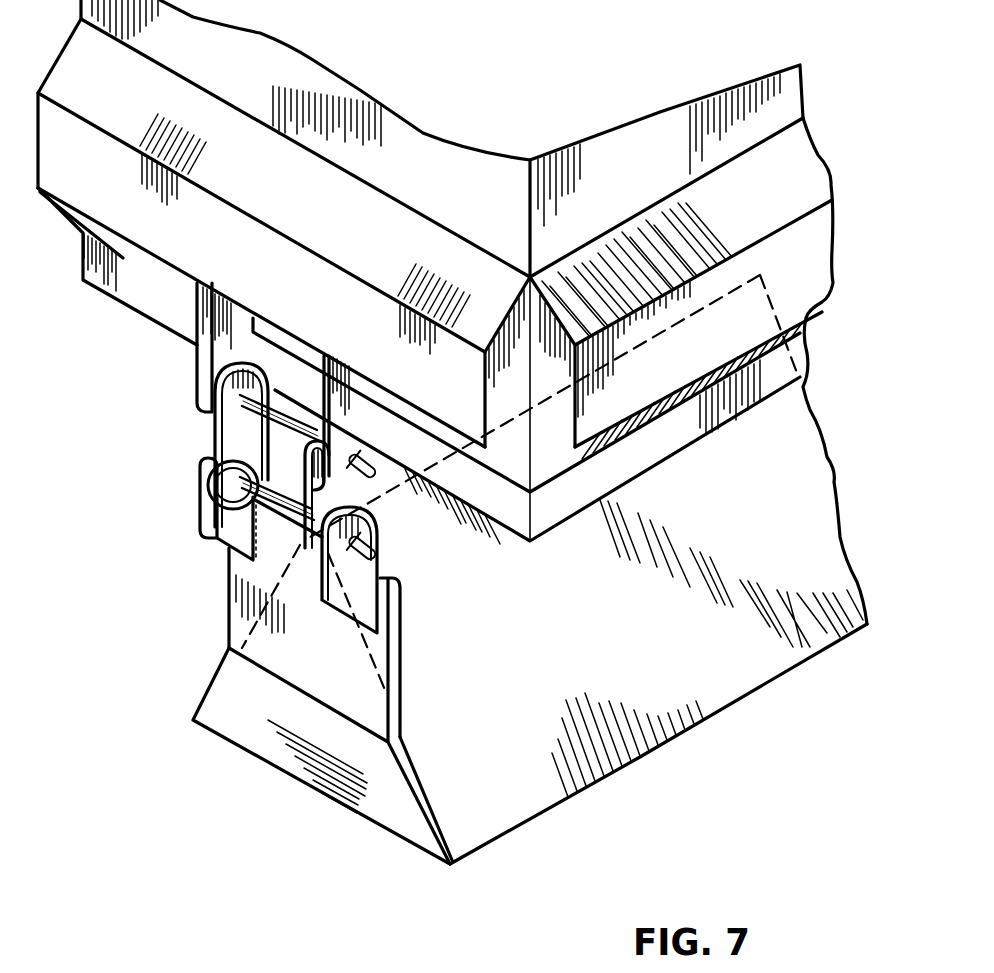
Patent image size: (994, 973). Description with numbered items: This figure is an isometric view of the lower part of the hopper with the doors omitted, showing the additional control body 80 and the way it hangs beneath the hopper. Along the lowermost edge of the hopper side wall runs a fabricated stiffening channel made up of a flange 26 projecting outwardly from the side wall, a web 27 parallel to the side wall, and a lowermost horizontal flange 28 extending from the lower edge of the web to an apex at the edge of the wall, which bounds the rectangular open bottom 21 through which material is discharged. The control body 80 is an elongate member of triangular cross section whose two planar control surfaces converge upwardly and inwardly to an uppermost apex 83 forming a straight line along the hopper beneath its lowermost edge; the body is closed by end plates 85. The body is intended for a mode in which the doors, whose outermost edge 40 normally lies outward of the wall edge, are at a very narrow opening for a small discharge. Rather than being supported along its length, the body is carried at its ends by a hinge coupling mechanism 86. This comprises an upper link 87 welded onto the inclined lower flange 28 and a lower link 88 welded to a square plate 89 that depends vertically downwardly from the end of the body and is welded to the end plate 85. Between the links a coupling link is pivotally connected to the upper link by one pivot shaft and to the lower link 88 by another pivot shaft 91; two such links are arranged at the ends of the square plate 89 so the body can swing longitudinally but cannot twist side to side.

The open bottom 21 is at (676, 457).
The flange 26 is at (368, 200).
The web 27 is at (325, 276).
The lowermost horizontal flange 28 is at (168, 270).
The outermost edge 40 is at (272, 372).
The uppermost apex 83 is at (402, 473).
The control body 80 is at (266, 777).
The end plates 85 is at (235, 722).
The hinge coupling mechanism 86 is at (180, 464).
The upper link 87 is at (213, 362).
The lower link 88 is at (222, 532).
The square plate 89 is at (218, 432).
The pivot shaft 91 is at (213, 470).